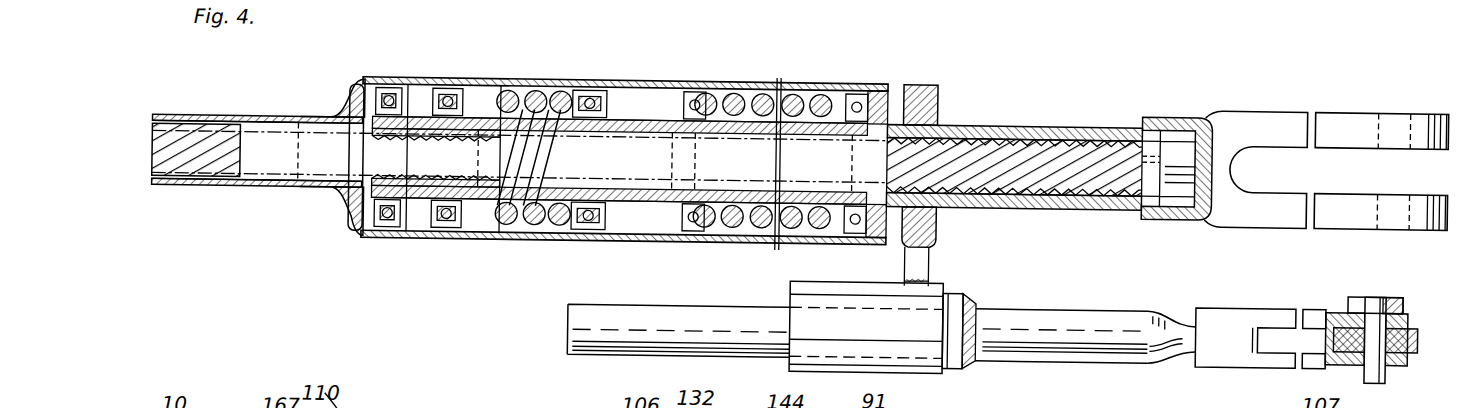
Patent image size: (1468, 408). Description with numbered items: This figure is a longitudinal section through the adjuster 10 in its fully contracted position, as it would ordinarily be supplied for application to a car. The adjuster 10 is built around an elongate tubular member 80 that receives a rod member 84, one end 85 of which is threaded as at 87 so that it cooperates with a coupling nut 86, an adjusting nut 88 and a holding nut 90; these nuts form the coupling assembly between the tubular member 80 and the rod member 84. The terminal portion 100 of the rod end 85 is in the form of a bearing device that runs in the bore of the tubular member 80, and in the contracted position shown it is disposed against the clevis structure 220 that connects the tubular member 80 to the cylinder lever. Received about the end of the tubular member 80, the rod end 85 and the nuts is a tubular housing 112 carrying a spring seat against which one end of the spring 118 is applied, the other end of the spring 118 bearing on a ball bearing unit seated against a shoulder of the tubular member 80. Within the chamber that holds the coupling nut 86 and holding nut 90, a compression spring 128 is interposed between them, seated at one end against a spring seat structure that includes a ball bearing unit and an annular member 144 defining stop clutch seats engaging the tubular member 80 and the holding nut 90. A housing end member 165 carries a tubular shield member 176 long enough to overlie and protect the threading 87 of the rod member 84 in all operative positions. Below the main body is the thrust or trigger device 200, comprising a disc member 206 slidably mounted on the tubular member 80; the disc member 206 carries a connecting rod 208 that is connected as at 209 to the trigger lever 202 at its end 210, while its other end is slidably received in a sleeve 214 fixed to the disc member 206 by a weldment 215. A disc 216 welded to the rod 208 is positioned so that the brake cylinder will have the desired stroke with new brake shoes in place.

The adjuster 10 is at (335, 245).
The tubular member 80 is at (1005, 122).
The rod member 84 is at (200, 166).
The end of rod member 85 is at (1105, 188).
The coupling nut 86 is at (432, 82).
The threading 87 is at (210, 190).
The adjusting nut 88 is at (348, 92).
The holding nut 90 is at (592, 96).
The terminal portion 100 is at (1185, 214).
The tubular housing 112 is at (715, 82).
The spring 118 is at (775, 88).
The compression spring 128 is at (536, 93).
The annular member 144 is at (622, 80).
The housing end member 165 is at (332, 106).
The tubular shield member 176 is at (290, 122).
The thrust or trigger device 200 is at (1098, 360).
The trigger lever 202 is at (1330, 331).
The disc member 206 is at (937, 100).
The connecting rod 208 is at (1045, 346).
The connection 209 is at (1400, 296).
The end of connecting rod 210 is at (1332, 330).
The sleeve 214 is at (920, 302).
The weldment 215 is at (896, 265).
The disc 216 is at (962, 292).
The clevis structure 220 is at (1270, 106).